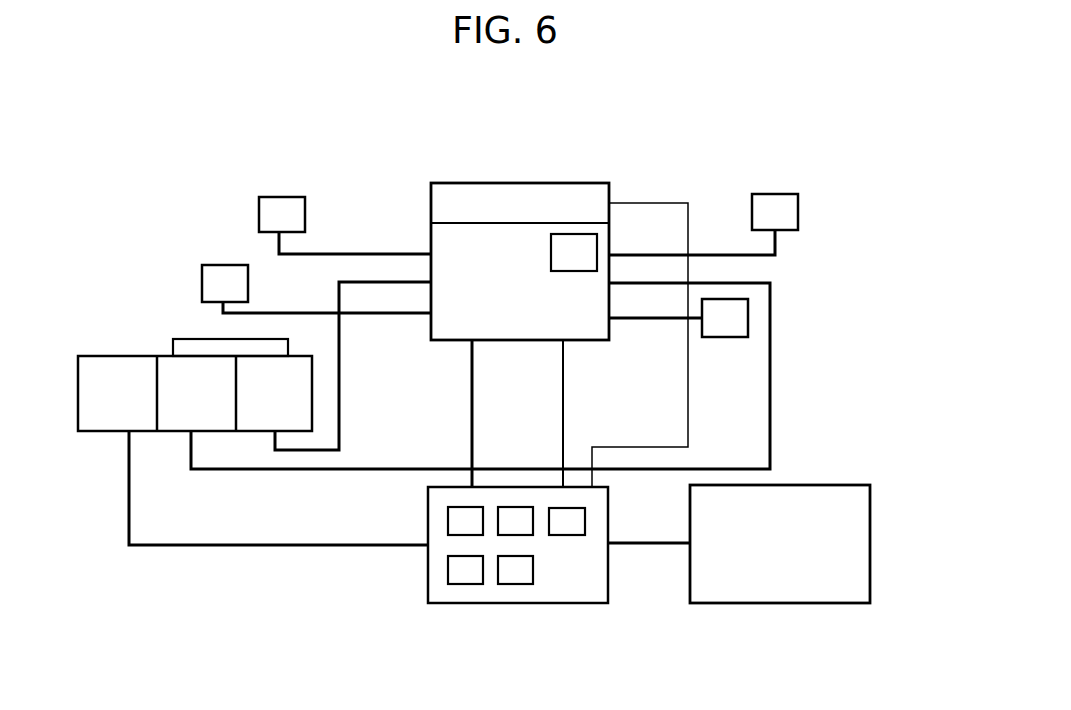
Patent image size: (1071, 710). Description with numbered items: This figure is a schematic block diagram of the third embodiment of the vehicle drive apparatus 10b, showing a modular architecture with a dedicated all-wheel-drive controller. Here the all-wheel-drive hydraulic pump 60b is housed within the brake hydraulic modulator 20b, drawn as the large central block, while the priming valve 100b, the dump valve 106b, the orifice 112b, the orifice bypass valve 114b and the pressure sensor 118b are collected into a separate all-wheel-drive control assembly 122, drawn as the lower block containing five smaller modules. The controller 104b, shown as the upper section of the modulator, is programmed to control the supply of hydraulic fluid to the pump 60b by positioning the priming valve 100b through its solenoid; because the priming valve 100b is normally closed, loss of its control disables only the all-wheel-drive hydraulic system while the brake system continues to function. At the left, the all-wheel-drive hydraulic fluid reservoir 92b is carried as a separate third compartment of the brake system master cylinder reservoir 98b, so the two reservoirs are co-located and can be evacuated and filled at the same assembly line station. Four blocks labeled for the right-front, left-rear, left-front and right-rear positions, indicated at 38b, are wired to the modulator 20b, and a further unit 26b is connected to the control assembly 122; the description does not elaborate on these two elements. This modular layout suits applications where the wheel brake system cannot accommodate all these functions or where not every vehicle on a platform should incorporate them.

The vehicle drive apparatus 10b is at (688, 127).
The brake hydraulic modulator 20b is at (470, 260).
The power source 26b is at (819, 497).
The wheel speed sensors (RF, LR, LF, RR) 38b is at (218, 265).
The all-wheel-drive hydraulic pump 60b is at (573, 245).
The all-wheel-drive hydraulic fluid reservoir 92b is at (102, 378).
The brake system master cylinder reservoir 98b is at (157, 355).
The priming valve 100b is at (469, 520).
The controller 104b is at (513, 204).
The dump valve 106b is at (515, 520).
The orifice 112b is at (565, 522).
The orifice bypass valve 114b is at (467, 573).
The pressure sensor 118b is at (515, 573).
The all-wheel-drive control assembly 122 is at (563, 605).